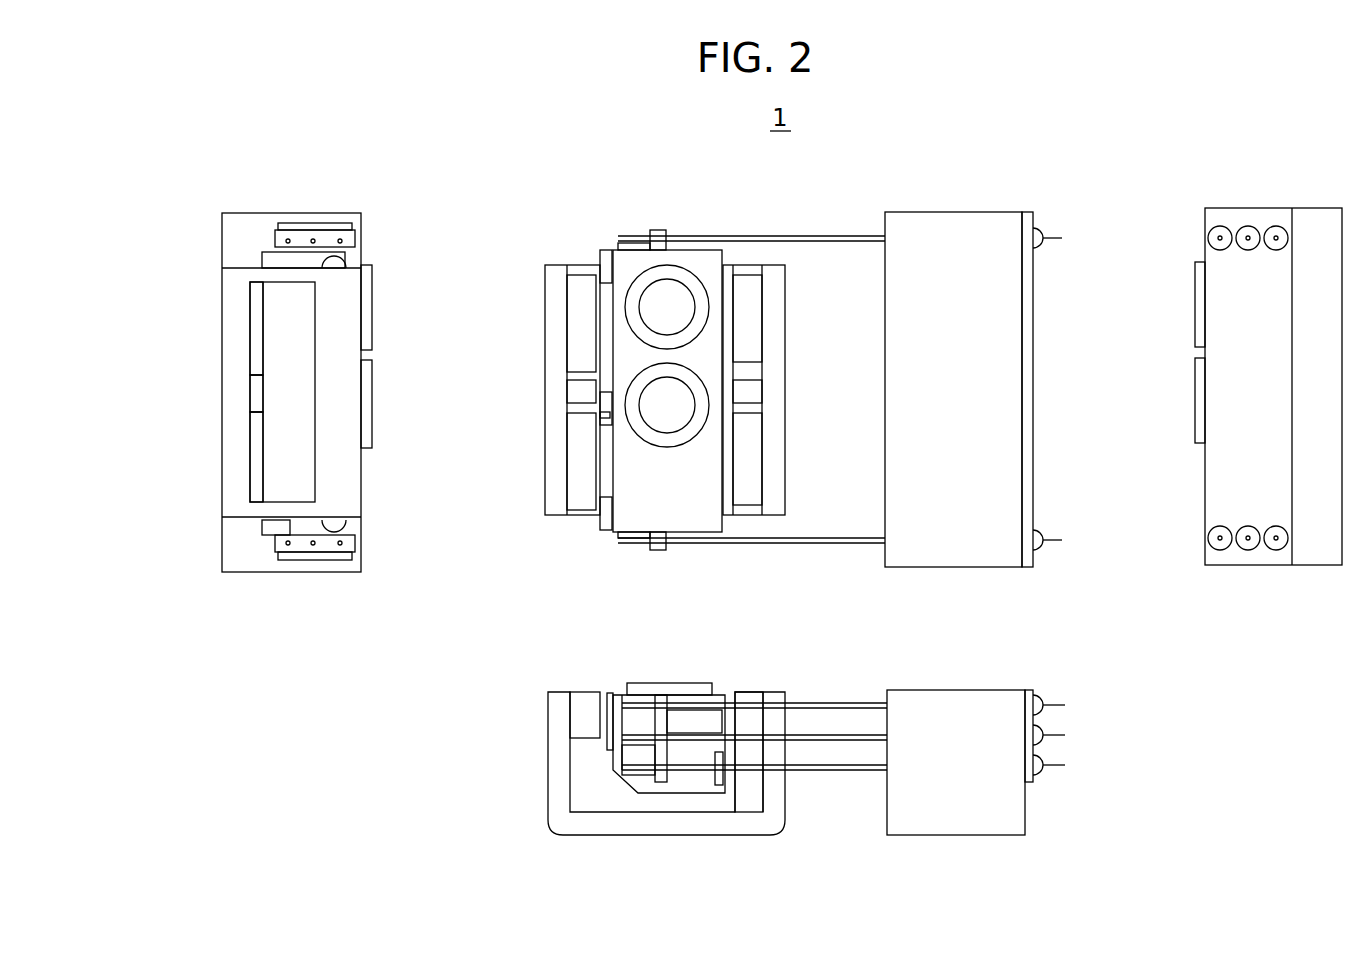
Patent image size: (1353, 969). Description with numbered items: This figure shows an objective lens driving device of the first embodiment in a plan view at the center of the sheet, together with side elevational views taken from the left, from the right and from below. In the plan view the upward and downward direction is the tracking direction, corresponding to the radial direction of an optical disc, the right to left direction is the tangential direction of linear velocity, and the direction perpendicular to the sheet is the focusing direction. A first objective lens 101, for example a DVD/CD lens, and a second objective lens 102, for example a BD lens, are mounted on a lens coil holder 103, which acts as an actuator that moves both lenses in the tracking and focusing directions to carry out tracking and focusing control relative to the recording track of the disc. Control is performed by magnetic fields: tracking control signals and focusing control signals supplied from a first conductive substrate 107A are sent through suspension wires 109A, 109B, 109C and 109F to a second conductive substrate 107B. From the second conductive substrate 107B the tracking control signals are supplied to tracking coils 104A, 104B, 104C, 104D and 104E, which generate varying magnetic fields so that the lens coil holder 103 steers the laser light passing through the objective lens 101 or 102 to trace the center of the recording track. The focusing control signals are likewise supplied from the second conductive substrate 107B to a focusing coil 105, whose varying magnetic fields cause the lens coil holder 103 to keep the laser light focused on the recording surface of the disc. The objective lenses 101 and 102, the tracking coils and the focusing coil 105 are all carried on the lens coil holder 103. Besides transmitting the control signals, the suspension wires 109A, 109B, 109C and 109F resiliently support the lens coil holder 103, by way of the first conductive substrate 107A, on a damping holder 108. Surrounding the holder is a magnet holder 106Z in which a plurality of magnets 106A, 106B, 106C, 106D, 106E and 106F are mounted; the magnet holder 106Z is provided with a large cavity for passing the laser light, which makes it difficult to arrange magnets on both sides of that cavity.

The first objective lens 101 is at (366, 285).
The second objective lens 102 is at (366, 418).
The lens coil holder 103 is at (275, 442).
The tracking coil 104A is at (345, 258).
The tracking coil 104B is at (606, 398).
The tracking coil 104C is at (606, 418).
The tracking coil 104D is at (350, 532).
The tracking coil 104E is at (718, 778).
The focusing coil 105 is at (340, 262).
The magnet 106A is at (580, 314).
The magnet 106B is at (580, 393).
The magnet 106C is at (580, 488).
The magnet 106D is at (258, 480).
The magnet 106E is at (258, 393).
The magnet 106F is at (258, 322).
The magnet holder 106Z is at (238, 276).
The first conductive substrate 107A is at (293, 238).
The second conductive substrate 107B is at (265, 535).
The damping holder 108 is at (246, 232).
The suspension wire 109A is at (815, 545).
The suspension wire 109B is at (850, 735).
The suspension wire 109C is at (835, 770).
The suspension wire 109F is at (845, 236).